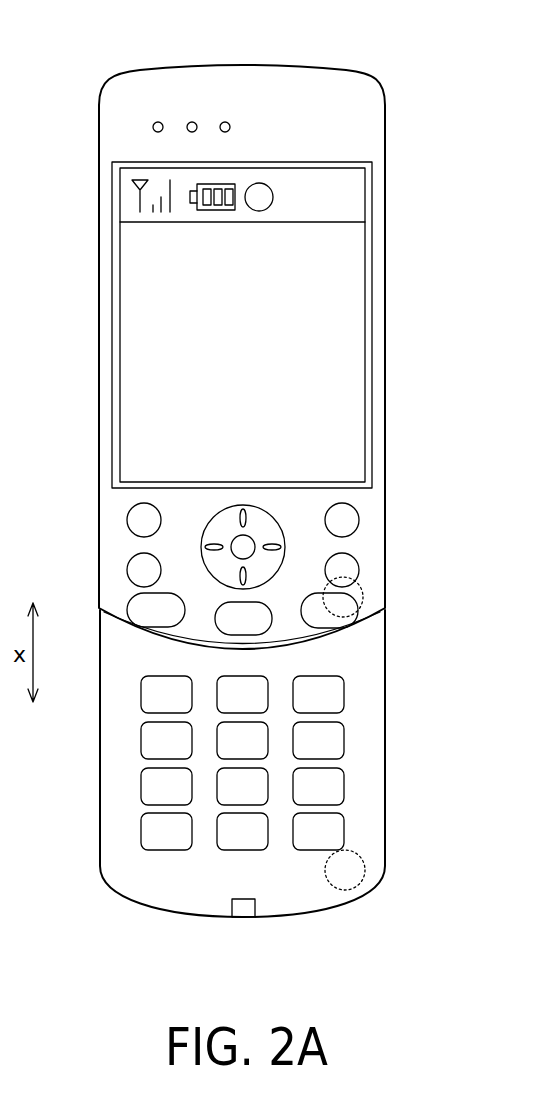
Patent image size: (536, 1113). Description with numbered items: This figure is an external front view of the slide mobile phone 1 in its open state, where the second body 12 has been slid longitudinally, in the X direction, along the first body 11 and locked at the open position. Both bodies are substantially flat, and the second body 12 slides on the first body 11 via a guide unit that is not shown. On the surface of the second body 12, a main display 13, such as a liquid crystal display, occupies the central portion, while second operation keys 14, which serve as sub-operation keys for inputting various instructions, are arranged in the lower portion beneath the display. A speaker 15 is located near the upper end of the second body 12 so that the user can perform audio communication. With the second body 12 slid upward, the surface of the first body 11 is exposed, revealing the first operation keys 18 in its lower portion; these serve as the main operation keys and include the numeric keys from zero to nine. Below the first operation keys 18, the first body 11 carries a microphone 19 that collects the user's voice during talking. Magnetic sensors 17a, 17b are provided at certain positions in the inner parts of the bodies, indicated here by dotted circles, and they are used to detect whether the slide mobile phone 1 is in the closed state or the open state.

The slide mobile phone 1 is at (396, 785).
The first body 11 is at (385, 688).
The second body 12 is at (385, 131).
The main display 13 is at (366, 262).
The second operation keys 14 is at (87, 503).
The speaker 15 is at (192, 118).
The magnetic sensor 17a is at (363, 596).
The magnetic sensor 17b is at (365, 870).
The first operation keys 18 is at (87, 677).
The microphone 19 is at (243, 906).